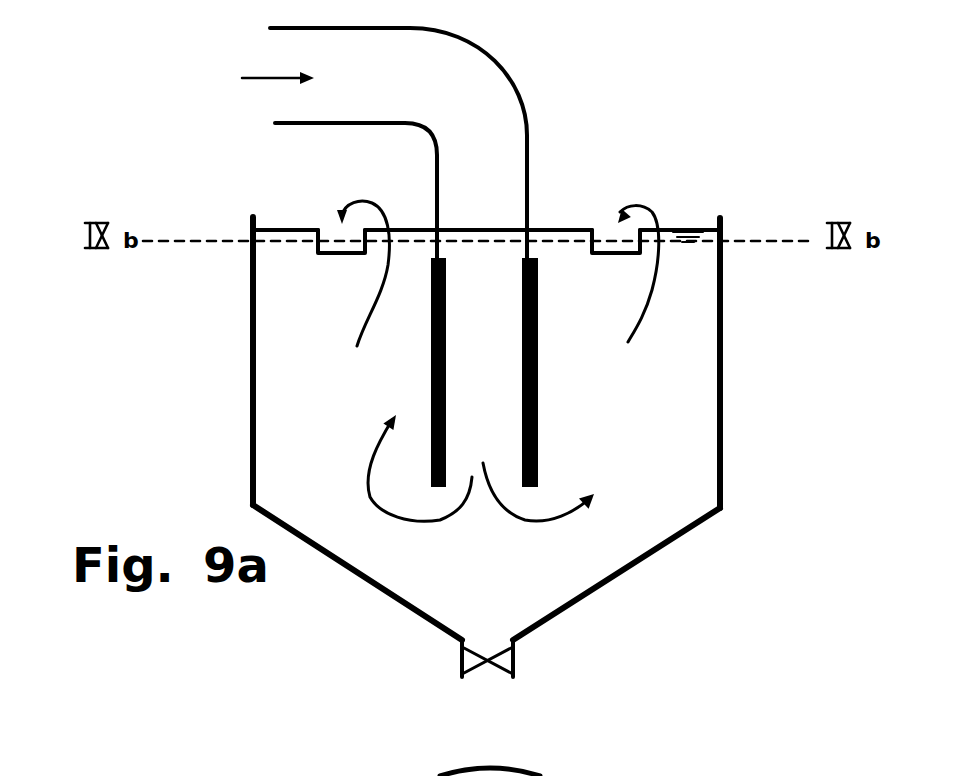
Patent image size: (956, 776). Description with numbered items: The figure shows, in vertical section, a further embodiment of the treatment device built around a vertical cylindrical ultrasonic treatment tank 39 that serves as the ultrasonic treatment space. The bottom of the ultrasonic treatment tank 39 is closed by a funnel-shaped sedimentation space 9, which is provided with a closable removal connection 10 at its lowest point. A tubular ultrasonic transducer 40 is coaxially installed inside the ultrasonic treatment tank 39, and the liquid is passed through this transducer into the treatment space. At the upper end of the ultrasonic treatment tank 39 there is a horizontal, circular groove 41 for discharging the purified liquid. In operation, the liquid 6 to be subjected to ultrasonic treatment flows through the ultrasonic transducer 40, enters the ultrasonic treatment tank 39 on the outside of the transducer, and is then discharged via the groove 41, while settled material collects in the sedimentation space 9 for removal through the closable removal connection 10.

The liquid 6 is at (485, 113).
The funnel-shaped sedimentation space 9 is at (405, 601).
The closable removal connection 10 is at (515, 665).
The ultrasonic treatment tank 39 is at (722, 344).
The tubular ultrasonic transducer 40 is at (538, 418).
The horizontal circular groove 41 is at (330, 236).